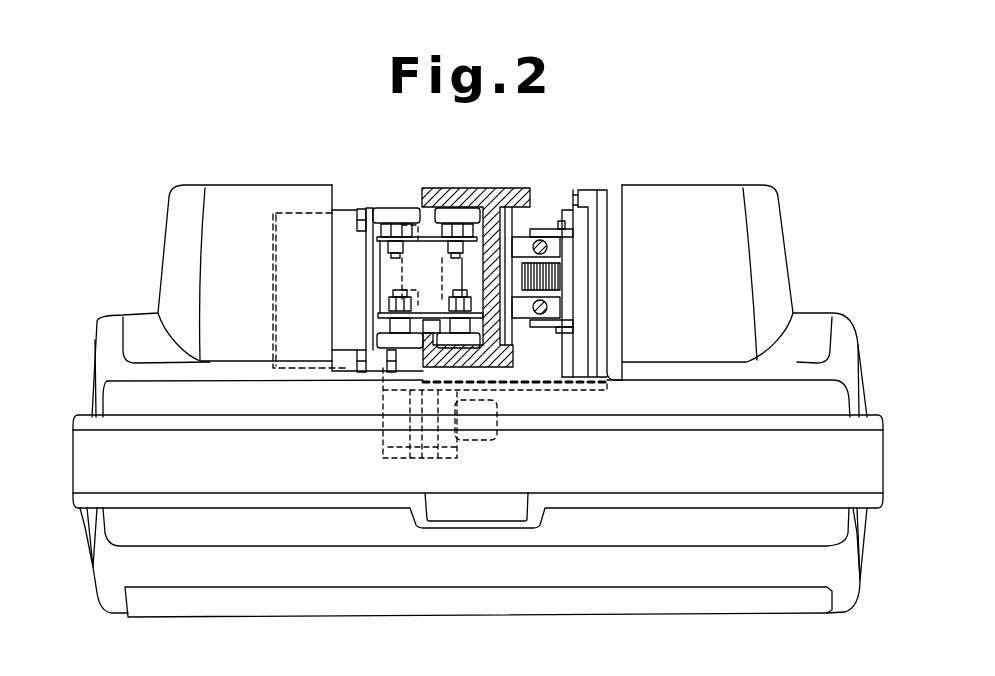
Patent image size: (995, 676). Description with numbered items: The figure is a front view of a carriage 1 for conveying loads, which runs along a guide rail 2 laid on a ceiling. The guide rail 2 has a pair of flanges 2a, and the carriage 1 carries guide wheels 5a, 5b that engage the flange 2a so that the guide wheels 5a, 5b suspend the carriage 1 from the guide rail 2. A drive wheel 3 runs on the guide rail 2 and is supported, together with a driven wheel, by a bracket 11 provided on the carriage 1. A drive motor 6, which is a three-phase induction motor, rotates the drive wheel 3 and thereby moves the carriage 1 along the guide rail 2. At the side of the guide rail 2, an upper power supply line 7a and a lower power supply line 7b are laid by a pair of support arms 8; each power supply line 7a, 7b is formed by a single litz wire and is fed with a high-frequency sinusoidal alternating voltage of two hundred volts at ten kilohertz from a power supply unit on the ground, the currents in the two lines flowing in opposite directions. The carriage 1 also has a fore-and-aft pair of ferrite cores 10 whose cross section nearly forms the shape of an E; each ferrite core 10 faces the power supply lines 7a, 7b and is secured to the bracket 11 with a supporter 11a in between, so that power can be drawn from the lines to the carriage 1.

The carriage 1 is at (847, 292).
The guide rail 2 is at (497, 192).
The flange 2a is at (424, 206).
The drive wheel 3 is at (418, 240).
The guide wheel 5a is at (380, 214).
The guide wheel 5b is at (377, 333).
The drive motor 6 is at (338, 226).
The upper power supply line 7a is at (541, 240).
The lower power supply line 7b is at (548, 307).
The support arm 8 is at (513, 243).
The ferrite core 10 is at (607, 257).
The bracket 11 is at (607, 217).
The supporter 11a is at (570, 207).